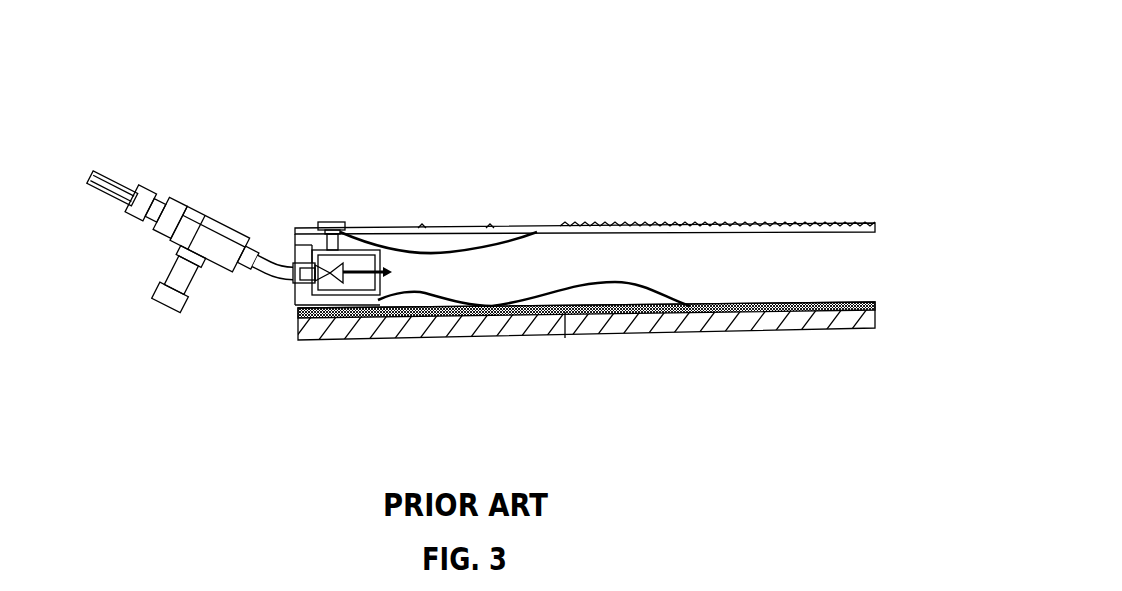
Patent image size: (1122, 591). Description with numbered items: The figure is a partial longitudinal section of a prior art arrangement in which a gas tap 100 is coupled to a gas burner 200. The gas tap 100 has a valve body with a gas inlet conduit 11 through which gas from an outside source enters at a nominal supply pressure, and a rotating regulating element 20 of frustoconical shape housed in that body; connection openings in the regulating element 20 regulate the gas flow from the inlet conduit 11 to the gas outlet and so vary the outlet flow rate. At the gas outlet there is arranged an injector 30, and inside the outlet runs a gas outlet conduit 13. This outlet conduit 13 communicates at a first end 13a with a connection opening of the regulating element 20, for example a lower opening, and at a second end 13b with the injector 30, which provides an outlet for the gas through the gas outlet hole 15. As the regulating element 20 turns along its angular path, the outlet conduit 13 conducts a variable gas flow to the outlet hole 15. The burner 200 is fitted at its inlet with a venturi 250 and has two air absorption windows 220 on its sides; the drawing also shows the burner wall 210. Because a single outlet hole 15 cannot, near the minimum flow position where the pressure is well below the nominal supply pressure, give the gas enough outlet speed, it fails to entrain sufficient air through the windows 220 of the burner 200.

The gas tap 100 is at (216, 139).
The regulating element 20 is at (208, 233).
The gas inlet conduit 11 is at (162, 287).
The first end 13a is at (175, 313).
The gas outlet conduit 13 is at (243, 277).
The second end 13b is at (305, 286).
The gas outlet hole 15 is at (323, 258).
The gas burner 200 is at (540, 178).
The top sheet 210 is at (313, 228).
The injector 30 is at (353, 228).
The air absorption windows 220 is at (365, 283).
The venturi 250 is at (458, 253).